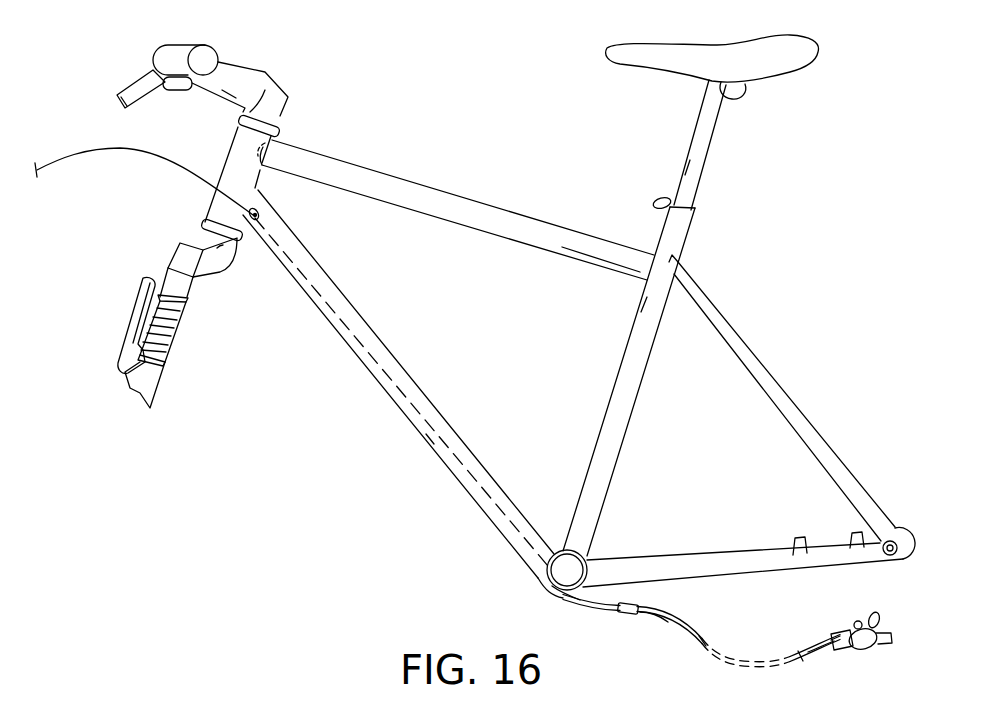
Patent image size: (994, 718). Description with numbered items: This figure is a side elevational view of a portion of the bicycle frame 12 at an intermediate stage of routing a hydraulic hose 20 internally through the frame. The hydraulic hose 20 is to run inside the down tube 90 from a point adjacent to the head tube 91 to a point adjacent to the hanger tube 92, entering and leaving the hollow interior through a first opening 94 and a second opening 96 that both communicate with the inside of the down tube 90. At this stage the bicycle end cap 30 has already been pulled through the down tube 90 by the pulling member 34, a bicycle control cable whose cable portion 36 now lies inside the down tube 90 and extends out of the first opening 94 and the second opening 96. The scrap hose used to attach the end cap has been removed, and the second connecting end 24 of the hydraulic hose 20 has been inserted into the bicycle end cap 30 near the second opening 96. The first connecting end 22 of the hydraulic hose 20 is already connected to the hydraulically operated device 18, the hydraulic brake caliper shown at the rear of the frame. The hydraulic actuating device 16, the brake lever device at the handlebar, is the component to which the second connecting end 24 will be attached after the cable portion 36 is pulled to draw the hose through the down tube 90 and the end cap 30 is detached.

The bicycle frame 12 is at (461, 192).
The hydraulic actuating device 16 is at (128, 66).
The hydraulically operated device 18 is at (855, 613).
The hydraulic hose 20 is at (693, 621).
The first connecting end 22 is at (818, 651).
The second connecting end 24 is at (652, 614).
The bicycle end cap 30 is at (627, 613).
The pulling member 34 is at (430, 439).
The cable portion 36 is at (120, 150).
The down tube 90 is at (376, 331).
The head tube 91 is at (237, 146).
The hanger tube 92 is at (560, 550).
The first opening 94 is at (256, 211).
The second opening 96 is at (567, 599).